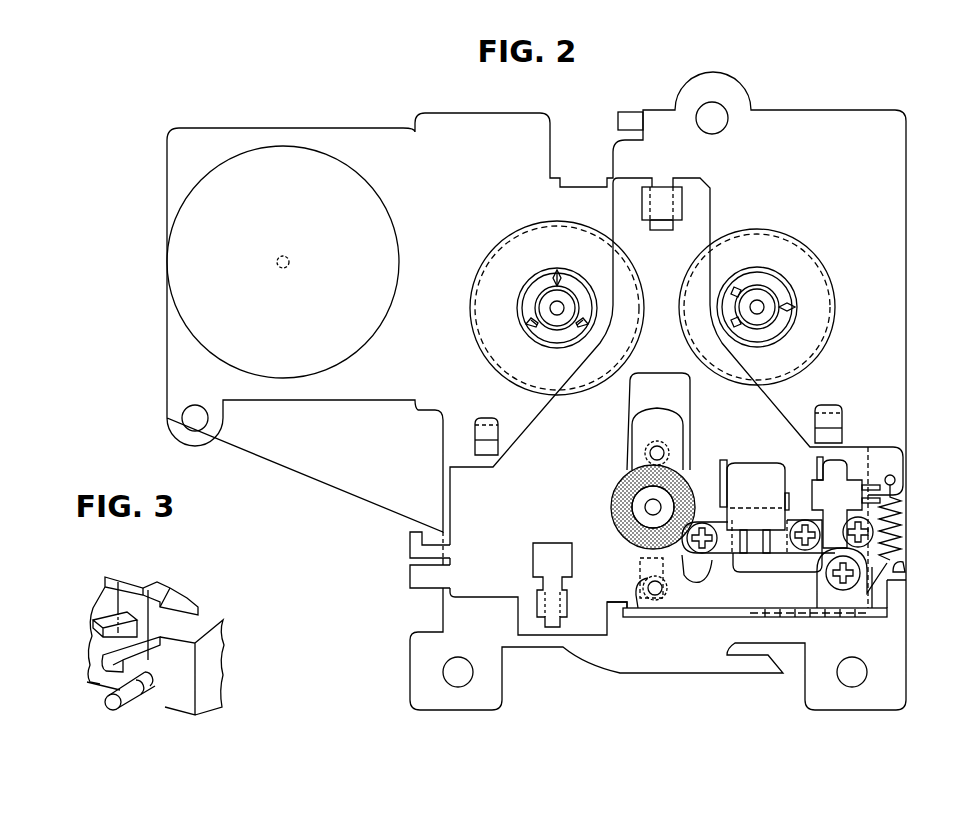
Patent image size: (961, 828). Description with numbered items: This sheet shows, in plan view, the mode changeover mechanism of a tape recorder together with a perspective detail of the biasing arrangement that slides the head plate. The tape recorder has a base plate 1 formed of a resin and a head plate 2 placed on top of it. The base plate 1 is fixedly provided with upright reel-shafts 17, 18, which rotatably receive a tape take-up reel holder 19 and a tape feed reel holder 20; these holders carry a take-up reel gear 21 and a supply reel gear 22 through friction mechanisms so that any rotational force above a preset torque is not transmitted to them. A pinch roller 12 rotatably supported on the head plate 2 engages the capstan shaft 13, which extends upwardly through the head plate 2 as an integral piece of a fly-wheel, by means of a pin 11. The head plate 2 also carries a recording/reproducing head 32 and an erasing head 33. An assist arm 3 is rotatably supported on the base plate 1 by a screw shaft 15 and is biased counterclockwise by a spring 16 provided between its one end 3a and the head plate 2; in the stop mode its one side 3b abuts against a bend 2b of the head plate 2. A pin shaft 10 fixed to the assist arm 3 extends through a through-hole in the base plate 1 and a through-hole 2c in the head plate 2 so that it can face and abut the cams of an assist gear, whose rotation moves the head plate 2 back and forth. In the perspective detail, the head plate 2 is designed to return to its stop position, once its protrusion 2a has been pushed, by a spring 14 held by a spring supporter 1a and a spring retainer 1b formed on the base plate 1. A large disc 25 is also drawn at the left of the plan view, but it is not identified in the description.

In FIG. 2, the base plate 1 is at (852, 110).
In FIG. 3, the base plate 1 is at (172, 710).
In FIG. 3, the spring supporter 1a is at (106, 706).
In FIG. 2, the spring retainer 1b is at (410, 575).
In FIG. 3, the spring retainer 1b is at (105, 663).
In FIG. 2, the head plate 2 is at (713, 188).
In FIG. 3, the head plate 2 is at (102, 582).
In FIG. 2, the protrusion 2a is at (410, 543).
In FIG. 3, the protrusion 2a is at (92, 622).
In FIG. 2, the bend 2b is at (630, 618).
In FIG. 2, the through-hole 2c is at (645, 560).
In FIG. 2, the assist arm 3 is at (745, 610).
In FIG. 2, the one end of assist arm 3a is at (898, 569).
In FIG. 2, the one side of assist arm 3b is at (653, 618).
In FIG. 2, the pin shaft 10 is at (647, 588).
In FIG. 2, the pin 11 is at (645, 507).
In FIG. 2, the pinch roller 12 is at (625, 488).
In FIG. 2, the capstan shaft 13 is at (648, 450).
In FIG. 3, the spring 14 is at (172, 593).
In FIG. 2, the screw shaft 15 is at (828, 592).
In FIG. 2, the spring 16 is at (898, 528).
In FIG. 2, the reel-shaft 17 is at (552, 304).
In FIG. 2, the reel-shaft 18 is at (760, 303).
In FIG. 2, the tape take-up reel holder 19 is at (524, 294).
In FIG. 2, the tape feed reel holder 20 is at (790, 280).
In FIG. 2, the take-up reel gear 21 is at (525, 233).
In FIG. 2, the supply reel gear 22 is at (738, 236).
In FIG. 2, the drive disc 25 is at (273, 155).
In FIG. 2, the recording/reproducing head 32 is at (753, 466).
In FIG. 2, the erasing head 33 is at (843, 462).